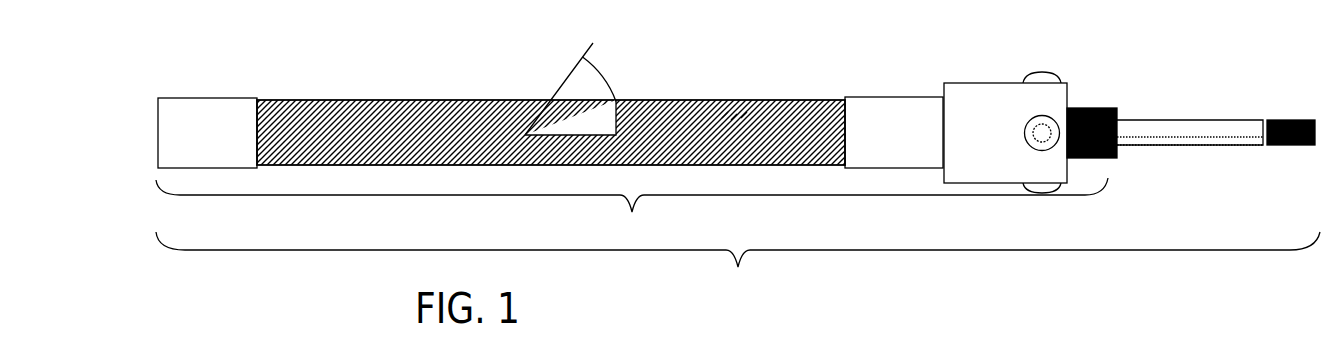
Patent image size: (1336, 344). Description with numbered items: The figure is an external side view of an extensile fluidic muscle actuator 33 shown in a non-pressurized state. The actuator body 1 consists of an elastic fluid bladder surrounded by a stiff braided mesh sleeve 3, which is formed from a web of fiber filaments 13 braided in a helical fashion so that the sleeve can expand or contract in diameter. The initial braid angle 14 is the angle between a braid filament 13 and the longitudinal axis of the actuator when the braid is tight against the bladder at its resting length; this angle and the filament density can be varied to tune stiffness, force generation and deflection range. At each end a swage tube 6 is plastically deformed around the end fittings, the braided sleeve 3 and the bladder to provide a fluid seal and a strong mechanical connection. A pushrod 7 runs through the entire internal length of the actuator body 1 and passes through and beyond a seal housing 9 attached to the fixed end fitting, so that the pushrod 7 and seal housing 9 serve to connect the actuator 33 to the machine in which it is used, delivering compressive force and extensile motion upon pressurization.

The actuator body 1 is at (632, 210).
The braided mesh sleeve 3 is at (363, 135).
The swage tube 6 is at (195, 140).
The pushrod 7 is at (1202, 142).
The seal housing 9 is at (1015, 125).
The fiber filaments 13 is at (743, 119).
The initial braid angle 14 is at (580, 89).
The actuator 33 is at (738, 267).